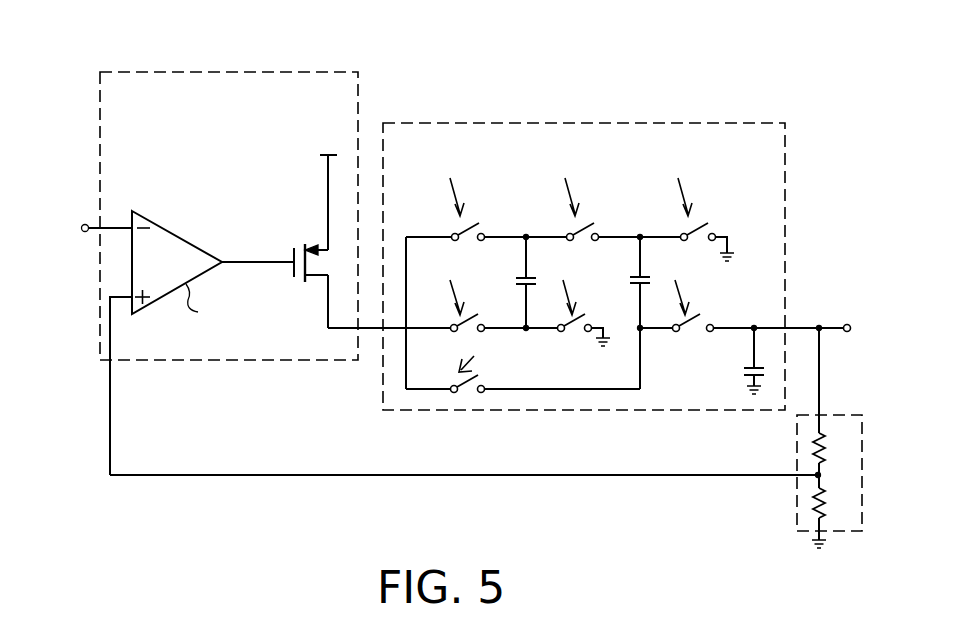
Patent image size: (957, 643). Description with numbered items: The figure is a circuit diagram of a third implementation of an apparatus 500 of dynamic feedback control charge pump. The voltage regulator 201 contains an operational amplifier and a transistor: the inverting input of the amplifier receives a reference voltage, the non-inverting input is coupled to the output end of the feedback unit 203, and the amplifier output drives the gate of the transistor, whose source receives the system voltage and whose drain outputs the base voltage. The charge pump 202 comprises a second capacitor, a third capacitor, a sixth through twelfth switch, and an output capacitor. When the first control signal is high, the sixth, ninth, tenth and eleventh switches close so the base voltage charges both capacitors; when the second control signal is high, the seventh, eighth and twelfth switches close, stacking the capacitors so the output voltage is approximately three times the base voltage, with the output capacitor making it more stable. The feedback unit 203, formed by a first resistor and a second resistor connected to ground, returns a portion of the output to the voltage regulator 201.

The voltage regulator 201 is at (172, 72).
The charge pump 202 is at (496, 123).
The feedback unit 203 is at (797, 498).
The apparatus of dynamic feedback control charge pump 500 is at (843, 617).